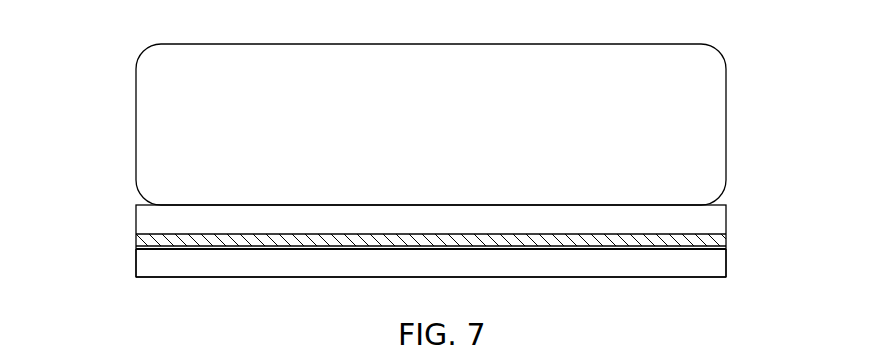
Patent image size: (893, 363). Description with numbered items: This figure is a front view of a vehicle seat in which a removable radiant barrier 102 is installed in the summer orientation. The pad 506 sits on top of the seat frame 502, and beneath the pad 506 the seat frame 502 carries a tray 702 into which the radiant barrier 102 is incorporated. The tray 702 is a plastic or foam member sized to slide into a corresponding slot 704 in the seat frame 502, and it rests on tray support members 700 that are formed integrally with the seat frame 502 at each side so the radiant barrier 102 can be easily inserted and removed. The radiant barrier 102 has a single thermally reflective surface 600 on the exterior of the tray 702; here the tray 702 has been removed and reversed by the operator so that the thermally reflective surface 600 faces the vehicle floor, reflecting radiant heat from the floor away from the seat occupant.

The pad 506 is at (136, 108).
The seat frame 502 is at (136, 220).
The radiant barrier 102 is at (726, 241).
The tray 702 is at (133, 241).
The thermally reflective surface 600 is at (226, 252).
The slot 704 is at (352, 252).
The tray support members 700 is at (143, 252).